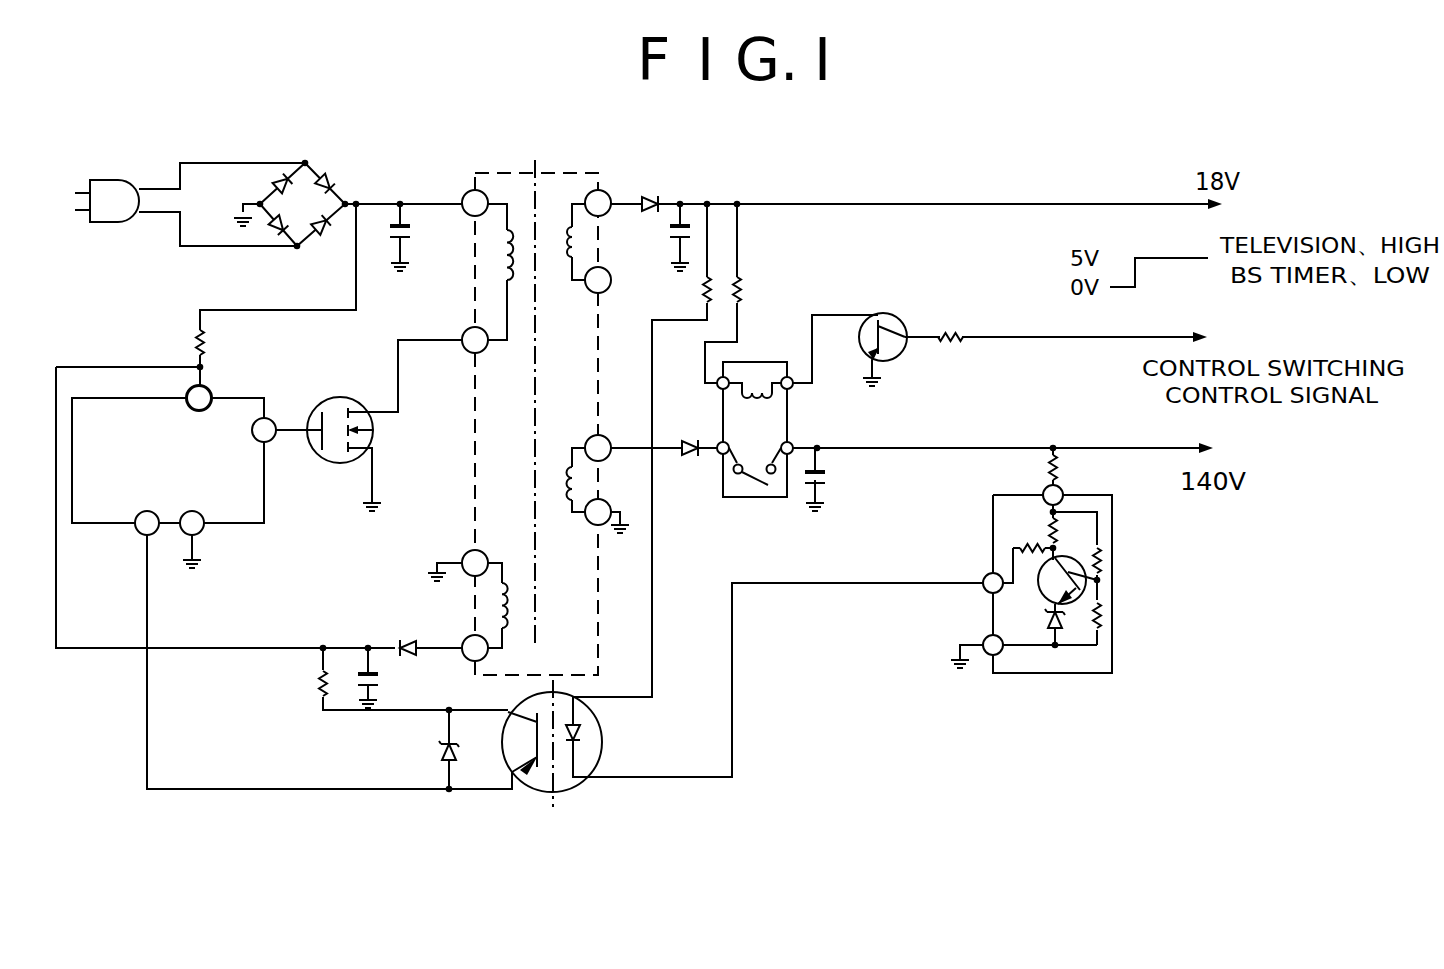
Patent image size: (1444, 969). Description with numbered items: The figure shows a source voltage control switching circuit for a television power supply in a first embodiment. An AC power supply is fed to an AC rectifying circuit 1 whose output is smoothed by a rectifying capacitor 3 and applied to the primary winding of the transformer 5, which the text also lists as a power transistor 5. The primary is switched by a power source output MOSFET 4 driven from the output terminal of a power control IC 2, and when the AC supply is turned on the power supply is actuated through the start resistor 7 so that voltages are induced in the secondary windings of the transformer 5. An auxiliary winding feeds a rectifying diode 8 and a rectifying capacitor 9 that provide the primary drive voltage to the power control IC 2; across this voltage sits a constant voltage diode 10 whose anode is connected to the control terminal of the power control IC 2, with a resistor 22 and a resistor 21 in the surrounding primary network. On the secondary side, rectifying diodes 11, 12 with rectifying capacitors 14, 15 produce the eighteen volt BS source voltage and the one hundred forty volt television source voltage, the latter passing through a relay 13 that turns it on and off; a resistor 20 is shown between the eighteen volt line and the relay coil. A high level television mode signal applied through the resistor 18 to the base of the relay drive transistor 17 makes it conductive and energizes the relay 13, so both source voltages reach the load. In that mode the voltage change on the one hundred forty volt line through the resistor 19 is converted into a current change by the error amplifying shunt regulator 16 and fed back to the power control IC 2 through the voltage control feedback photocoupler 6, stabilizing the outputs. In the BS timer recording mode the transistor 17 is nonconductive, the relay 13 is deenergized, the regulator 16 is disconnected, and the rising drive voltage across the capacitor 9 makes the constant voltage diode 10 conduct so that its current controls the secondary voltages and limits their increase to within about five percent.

The AC rectifying circuit 1 is at (327, 172).
The power control IC 2 is at (258, 393).
The rectifying capacitor 3 is at (418, 240).
The power source output MOSFET 4 is at (342, 395).
The power transistor 5 is at (571, 166).
The voltage control feedback photocoupler 6 is at (602, 742).
The start resistor 7 is at (195, 343).
The rectifying diode 8 is at (408, 641).
The rectifying capacitor 9 is at (356, 677).
The 18-V controlling constant voltage diode 10 is at (438, 742).
The rectifying diode 11 is at (651, 196).
The rectifying diode 12 is at (686, 460).
The relay 13 is at (788, 417).
The rectifying capacitor 14 is at (690, 232).
The rectifying capacitor 15 is at (833, 478).
The 140-V control error amplifying shunt regulator 16 is at (1023, 674).
The relay drive transistor 17 is at (890, 313).
The resistor 18 is at (955, 330).
The resistor 19 is at (1058, 474).
The resistor 20 is at (745, 284).
The resistor 21 is at (703, 283).
The resistor 22 is at (318, 685).